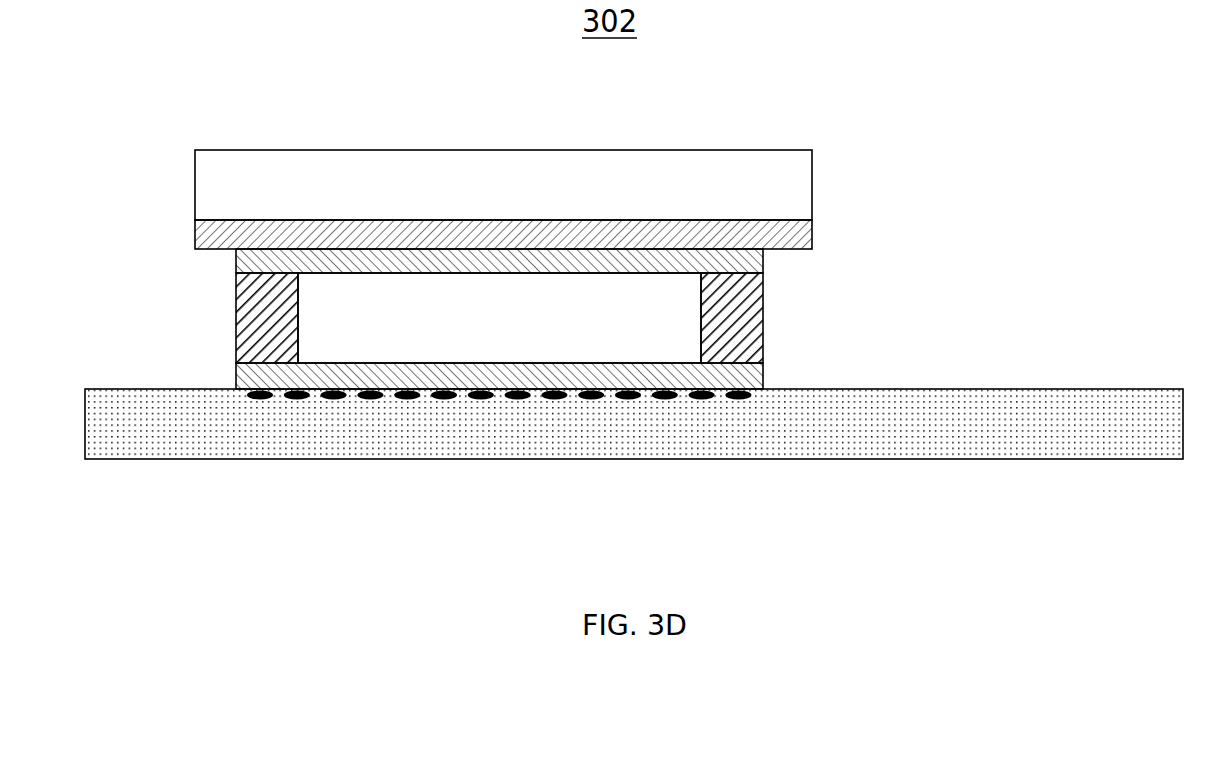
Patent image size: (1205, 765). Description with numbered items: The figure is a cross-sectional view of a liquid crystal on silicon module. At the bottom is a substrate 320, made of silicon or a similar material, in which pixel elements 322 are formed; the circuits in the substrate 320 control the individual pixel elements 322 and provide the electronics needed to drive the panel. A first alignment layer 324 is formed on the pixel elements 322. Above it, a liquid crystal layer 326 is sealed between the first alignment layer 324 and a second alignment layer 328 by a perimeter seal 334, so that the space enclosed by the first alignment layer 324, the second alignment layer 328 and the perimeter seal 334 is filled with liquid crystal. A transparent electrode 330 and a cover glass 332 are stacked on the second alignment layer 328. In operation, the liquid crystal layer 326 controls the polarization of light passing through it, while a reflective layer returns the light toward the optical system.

The substrate 320 is at (1025, 438).
The pixel elements 322 is at (550, 404).
The first alignment layer 324 is at (236, 376).
The liquid crystal layer 326 is at (391, 335).
The second alignment layer 328 is at (236, 263).
The transparent electrode 330 is at (813, 230).
The cover glass 332 is at (785, 170).
The perimeter seal 334 is at (236, 318).